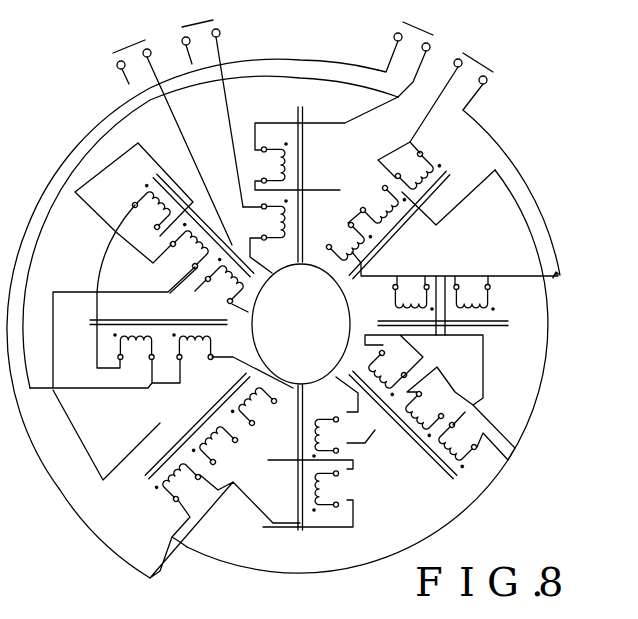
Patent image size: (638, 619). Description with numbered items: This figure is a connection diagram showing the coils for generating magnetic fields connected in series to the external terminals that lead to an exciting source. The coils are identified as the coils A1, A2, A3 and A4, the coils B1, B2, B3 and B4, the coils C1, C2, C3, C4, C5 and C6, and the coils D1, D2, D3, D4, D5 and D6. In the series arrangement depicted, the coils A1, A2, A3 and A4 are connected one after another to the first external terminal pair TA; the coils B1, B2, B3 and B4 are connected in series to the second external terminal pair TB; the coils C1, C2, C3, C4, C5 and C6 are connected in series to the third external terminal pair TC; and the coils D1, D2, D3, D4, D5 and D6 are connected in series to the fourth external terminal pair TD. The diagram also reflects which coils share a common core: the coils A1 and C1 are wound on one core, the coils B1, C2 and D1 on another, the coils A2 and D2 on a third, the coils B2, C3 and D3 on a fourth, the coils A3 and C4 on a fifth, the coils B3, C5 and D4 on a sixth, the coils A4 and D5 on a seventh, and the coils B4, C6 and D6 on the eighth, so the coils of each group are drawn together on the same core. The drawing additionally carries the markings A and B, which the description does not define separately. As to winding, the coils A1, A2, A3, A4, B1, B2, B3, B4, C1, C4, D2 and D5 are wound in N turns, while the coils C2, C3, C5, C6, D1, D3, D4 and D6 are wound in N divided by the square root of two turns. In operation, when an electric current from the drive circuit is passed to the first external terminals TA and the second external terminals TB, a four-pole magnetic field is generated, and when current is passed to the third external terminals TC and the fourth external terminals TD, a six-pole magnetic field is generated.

The phase A stator pole A is at (299, 327).
The phase B stator pole B is at (298, 330).
The coil A1 is at (274, 219).
The coil A2 is at (413, 293).
The coil A3 is at (328, 437).
The coil A4 is at (192, 354).
The coil B1 is at (349, 242).
The coil B2 is at (387, 373).
The coil B3 is at (254, 406).
The coil B4 is at (225, 282).
The coil C1 is at (275, 162).
The coil C2 is at (383, 205).
The coil C3 is at (424, 414).
The coil C4 is at (328, 491).
The coil C5 is at (215, 445).
The coil C6 is at (190, 246).
The coil D1 is at (418, 171).
The coil D2 is at (474, 293).
The coil D3 is at (457, 445).
The coil D4 is at (178, 482).
The coil D5 is at (133, 354).
The coil D6 is at (152, 207).
The first external terminal pair TA is at (212, 103).
The second external terminal pair TB is at (172, 135).
The third external terminal pair TC is at (405, 50).
The fourth external terminal pair TD is at (456, 97).